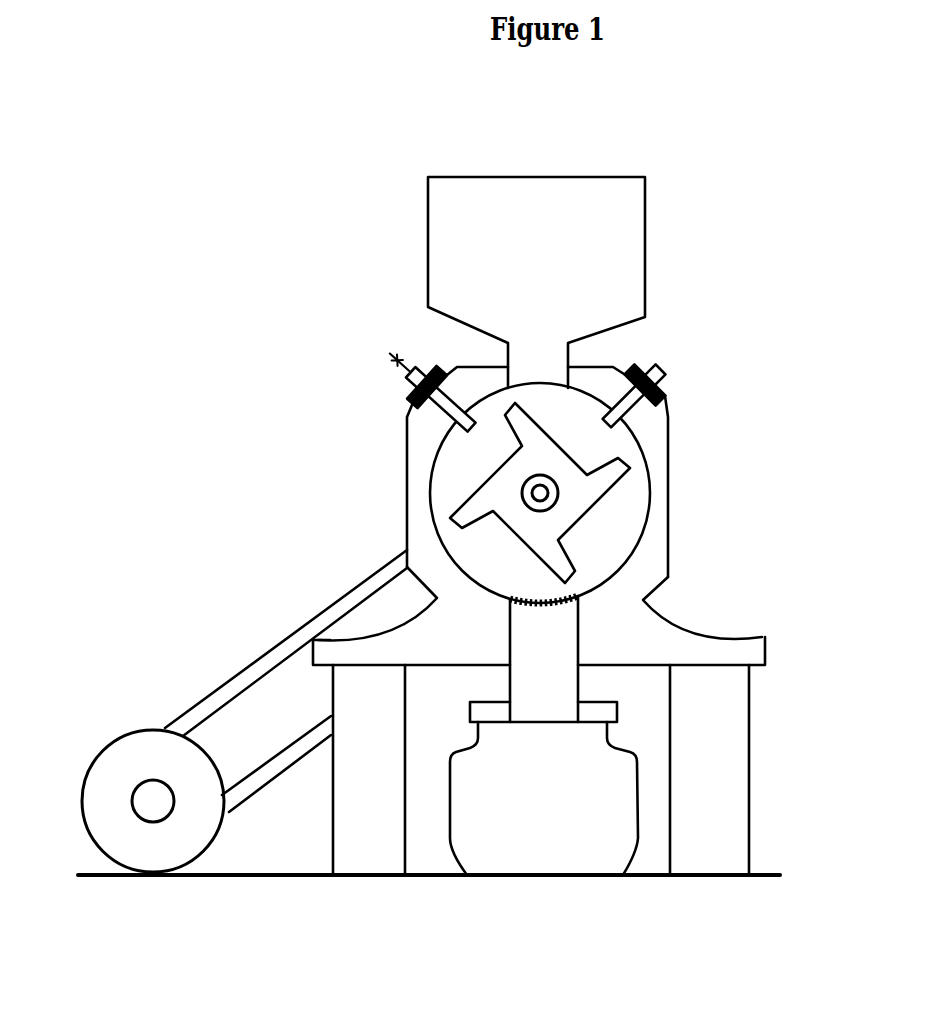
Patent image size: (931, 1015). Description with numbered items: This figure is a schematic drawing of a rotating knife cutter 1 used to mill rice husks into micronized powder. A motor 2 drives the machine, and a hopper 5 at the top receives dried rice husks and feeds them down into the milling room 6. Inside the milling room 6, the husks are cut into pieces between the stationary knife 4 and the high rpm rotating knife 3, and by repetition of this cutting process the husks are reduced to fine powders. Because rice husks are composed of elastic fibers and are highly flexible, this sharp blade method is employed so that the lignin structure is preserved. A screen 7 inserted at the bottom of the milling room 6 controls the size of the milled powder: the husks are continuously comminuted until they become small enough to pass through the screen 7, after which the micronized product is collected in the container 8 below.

The rotating knife cutter 1 is at (523, 880).
The motor 2 is at (104, 745).
The rotating knife 3 is at (463, 503).
The stationary knife 4 is at (416, 389).
The hopper 5 is at (426, 212).
The milling room 6 is at (595, 449).
The screen 7 is at (588, 590).
The container 8 is at (587, 785).